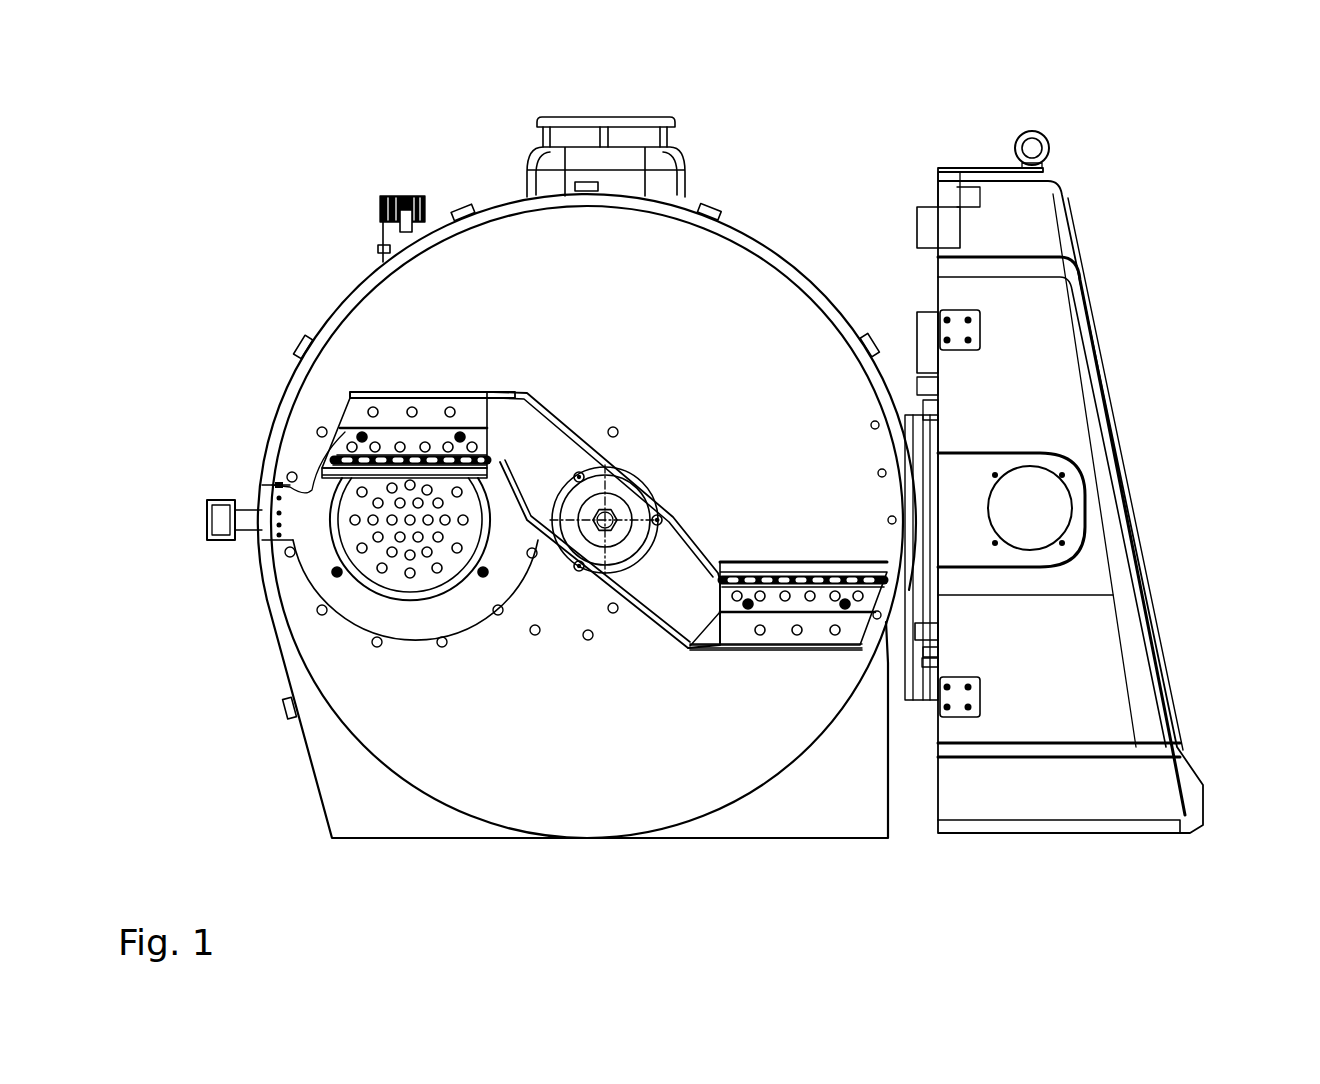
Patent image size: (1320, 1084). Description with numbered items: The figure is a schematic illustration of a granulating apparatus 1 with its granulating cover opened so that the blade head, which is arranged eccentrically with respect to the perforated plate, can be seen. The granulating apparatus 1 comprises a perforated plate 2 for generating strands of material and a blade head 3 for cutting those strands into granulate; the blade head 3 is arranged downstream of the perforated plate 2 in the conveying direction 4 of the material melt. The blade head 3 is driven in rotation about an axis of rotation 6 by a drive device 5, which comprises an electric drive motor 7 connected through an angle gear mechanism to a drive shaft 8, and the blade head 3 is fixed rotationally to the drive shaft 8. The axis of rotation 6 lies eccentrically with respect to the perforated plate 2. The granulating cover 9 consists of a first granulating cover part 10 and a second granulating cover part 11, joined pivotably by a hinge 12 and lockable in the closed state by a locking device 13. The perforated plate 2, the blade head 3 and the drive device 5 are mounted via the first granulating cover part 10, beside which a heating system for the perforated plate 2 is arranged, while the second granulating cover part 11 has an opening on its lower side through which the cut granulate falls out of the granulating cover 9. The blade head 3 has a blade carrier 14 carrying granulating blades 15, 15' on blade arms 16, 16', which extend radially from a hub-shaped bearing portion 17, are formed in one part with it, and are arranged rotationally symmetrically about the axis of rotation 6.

The granulating apparatus 1 is at (214, 236).
The perforated plate 2 is at (350, 562).
The blade head 3 is at (602, 412).
The conveying direction 4 is at (312, 151).
The drive device 5 is at (638, 110).
The axis of rotation 6 is at (607, 512).
The electric drive motor 7 is at (577, 135).
The drive shaft 8 is at (615, 545).
The granulating cover 9 is at (884, 845).
The first granulating cover part 10 is at (800, 822).
The second granulating cover part 11 is at (1128, 783).
The hinge 12 is at (930, 630).
The locking device 13 is at (403, 196).
The blade carrier 14 is at (545, 396).
The granulating blade 15 is at (317, 466).
The granulating blade 15' is at (988, 585).
The blade arm 16 is at (432, 219).
The blade arm 16' is at (776, 789).
The bearing portion 17 is at (582, 575).